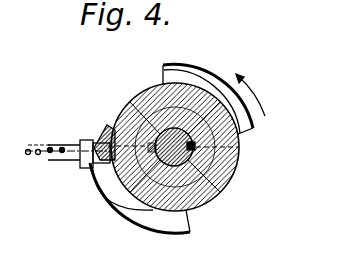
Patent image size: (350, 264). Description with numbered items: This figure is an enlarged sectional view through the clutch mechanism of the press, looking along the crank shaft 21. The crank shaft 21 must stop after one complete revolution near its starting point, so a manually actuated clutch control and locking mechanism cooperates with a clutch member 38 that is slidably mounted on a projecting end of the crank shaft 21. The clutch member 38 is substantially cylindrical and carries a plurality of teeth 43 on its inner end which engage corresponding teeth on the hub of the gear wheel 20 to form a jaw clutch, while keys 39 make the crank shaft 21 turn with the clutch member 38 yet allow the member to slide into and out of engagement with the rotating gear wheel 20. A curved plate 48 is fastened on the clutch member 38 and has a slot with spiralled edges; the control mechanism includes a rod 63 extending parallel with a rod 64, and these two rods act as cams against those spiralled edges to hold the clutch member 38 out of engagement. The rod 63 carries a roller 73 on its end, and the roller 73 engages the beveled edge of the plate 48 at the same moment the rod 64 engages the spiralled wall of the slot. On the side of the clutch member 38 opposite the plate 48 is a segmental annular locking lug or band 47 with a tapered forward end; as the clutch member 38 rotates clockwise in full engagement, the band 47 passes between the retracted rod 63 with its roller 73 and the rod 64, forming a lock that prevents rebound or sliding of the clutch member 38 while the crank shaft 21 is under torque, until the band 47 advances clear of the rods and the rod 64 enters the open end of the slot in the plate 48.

The gear wheel 20 is at (79, 202).
The crank shaft 21 is at (246, 130).
The clutch member 38 is at (226, 113).
The keys 39 is at (133, 170).
The teeth 43 is at (145, 105).
The segmental annular locking lug or band 47 is at (243, 80).
The curved plate 48 is at (162, 220).
The rod 63 is at (47, 145).
The rod 64 is at (40, 160).
The roller 73 is at (86, 136).